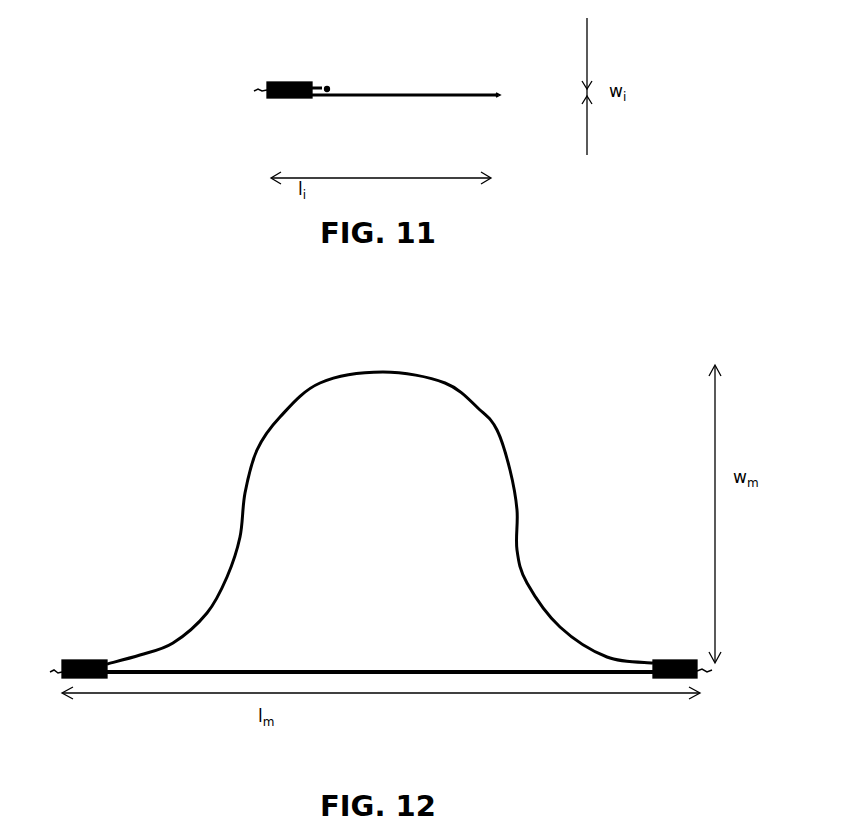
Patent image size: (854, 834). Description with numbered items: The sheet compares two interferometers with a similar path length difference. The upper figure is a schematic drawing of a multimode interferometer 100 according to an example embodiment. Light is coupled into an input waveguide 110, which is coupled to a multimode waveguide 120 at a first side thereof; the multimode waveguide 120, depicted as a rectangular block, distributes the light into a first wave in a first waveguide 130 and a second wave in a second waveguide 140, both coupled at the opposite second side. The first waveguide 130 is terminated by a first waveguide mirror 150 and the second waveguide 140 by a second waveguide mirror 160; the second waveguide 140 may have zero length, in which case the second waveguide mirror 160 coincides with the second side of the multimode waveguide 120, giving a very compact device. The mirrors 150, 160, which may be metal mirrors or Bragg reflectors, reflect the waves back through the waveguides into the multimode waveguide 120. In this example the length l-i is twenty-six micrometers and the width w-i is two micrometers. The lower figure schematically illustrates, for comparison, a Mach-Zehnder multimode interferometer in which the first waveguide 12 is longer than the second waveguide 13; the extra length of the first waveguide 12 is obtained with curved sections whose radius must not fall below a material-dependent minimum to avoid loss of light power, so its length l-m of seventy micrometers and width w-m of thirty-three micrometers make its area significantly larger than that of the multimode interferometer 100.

In FIG. 11, the multimode interferometer 100 is at (208, 40).
In FIG. 11, the input waveguide 110 is at (256, 92).
In FIG. 11, the multimode waveguide 120 is at (290, 100).
In FIG. 11, the first waveguide 130 is at (397, 100).
In FIG. 11, the second waveguide 140 is at (318, 85).
In FIG. 11, the first waveguide mirror 150 is at (499, 94).
In FIG. 11, the second waveguide mirror 160 is at (329, 87).
In FIG. 12, the first waveguide 12 is at (497, 432).
In FIG. 12, the second waveguide 13 is at (372, 670).